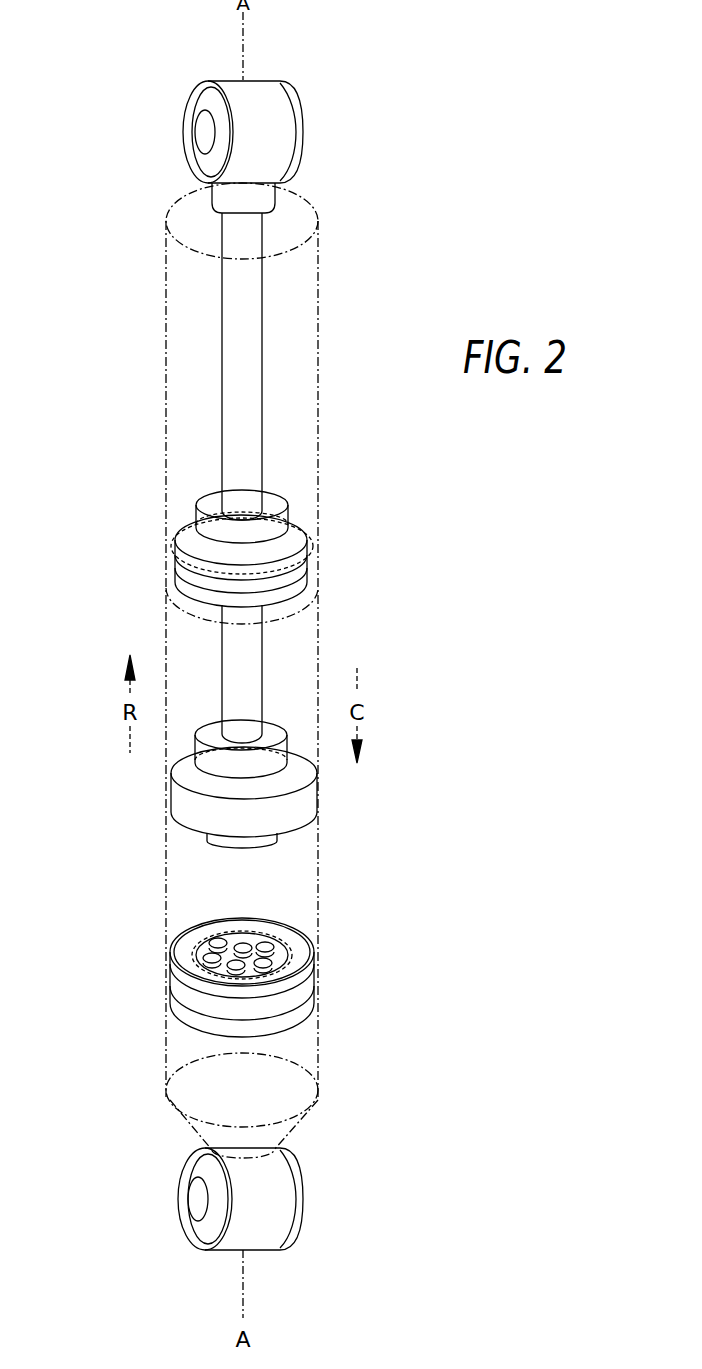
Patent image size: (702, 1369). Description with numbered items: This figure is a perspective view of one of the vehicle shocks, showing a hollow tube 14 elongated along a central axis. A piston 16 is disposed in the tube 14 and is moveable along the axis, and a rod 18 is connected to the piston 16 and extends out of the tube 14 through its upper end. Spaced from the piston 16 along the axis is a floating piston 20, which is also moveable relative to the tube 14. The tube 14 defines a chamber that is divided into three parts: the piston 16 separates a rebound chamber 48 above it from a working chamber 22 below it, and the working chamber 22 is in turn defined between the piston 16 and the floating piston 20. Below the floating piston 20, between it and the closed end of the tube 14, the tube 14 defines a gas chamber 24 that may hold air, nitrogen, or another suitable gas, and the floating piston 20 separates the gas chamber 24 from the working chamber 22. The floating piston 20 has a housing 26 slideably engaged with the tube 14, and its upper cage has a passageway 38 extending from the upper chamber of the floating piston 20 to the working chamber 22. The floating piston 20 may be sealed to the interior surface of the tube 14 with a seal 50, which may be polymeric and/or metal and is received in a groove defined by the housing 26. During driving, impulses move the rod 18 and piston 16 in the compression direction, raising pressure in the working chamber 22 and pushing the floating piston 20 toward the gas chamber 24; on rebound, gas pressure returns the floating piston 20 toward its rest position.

The tube 14 is at (166, 893).
The piston 16 is at (298, 800).
The rod 18 is at (250, 652).
The floating piston 20 is at (300, 1032).
The working chamber 22 is at (198, 868).
The gas chamber 24 is at (208, 1075).
The housing 26 is at (172, 1017).
The passageway 38 is at (268, 947).
The rebound chamber 48 is at (200, 652).
The seal 50 is at (185, 990).